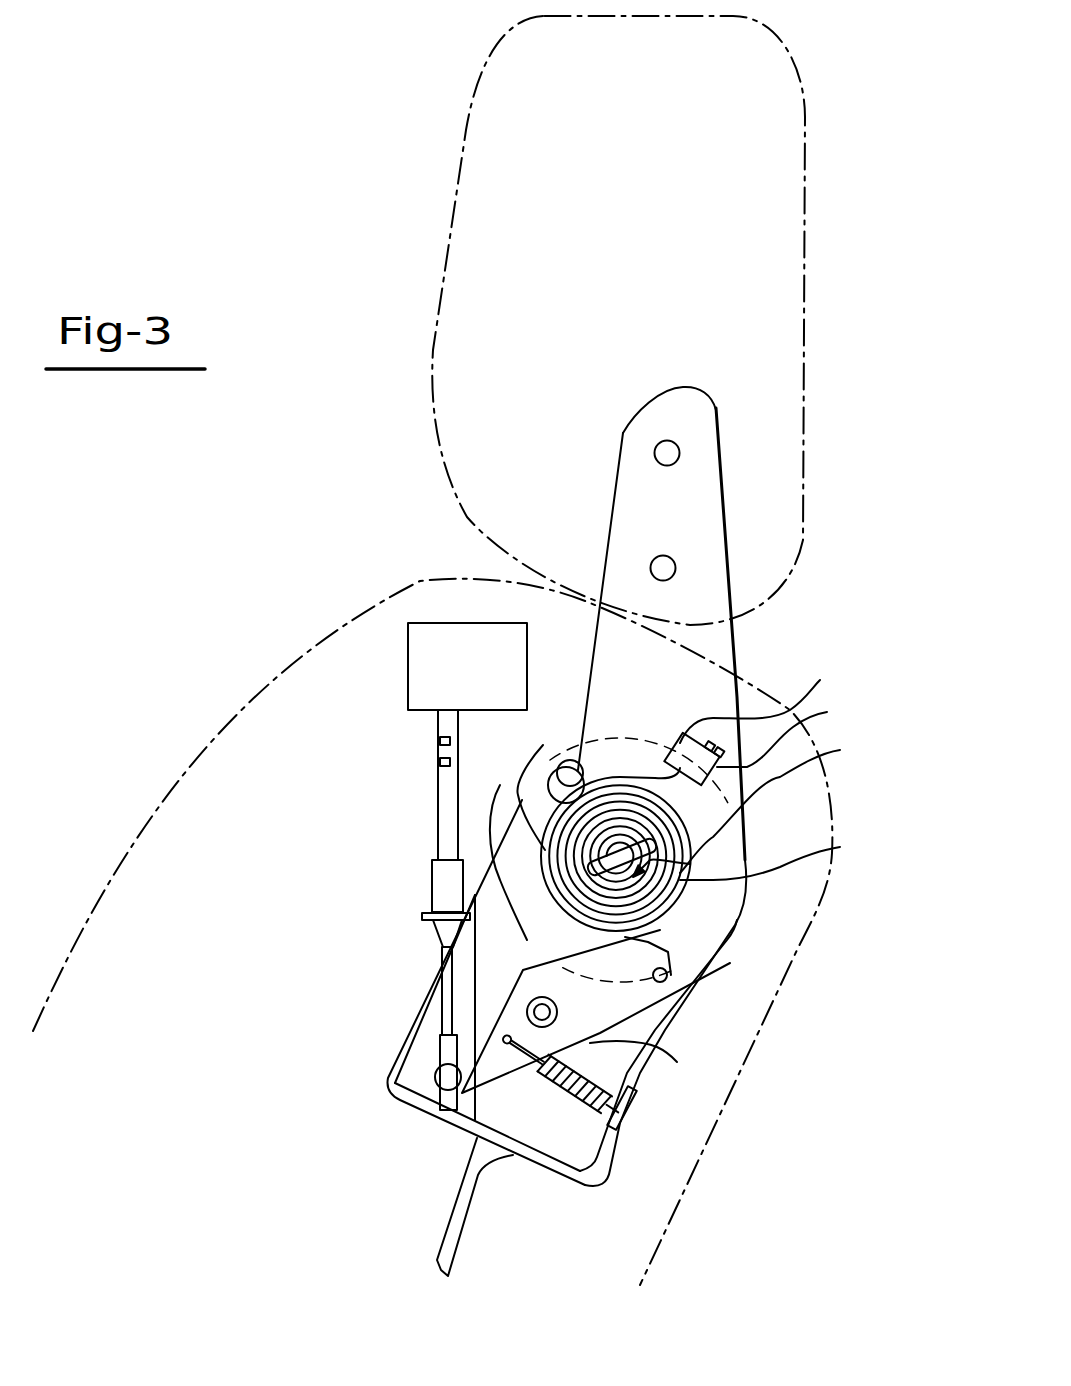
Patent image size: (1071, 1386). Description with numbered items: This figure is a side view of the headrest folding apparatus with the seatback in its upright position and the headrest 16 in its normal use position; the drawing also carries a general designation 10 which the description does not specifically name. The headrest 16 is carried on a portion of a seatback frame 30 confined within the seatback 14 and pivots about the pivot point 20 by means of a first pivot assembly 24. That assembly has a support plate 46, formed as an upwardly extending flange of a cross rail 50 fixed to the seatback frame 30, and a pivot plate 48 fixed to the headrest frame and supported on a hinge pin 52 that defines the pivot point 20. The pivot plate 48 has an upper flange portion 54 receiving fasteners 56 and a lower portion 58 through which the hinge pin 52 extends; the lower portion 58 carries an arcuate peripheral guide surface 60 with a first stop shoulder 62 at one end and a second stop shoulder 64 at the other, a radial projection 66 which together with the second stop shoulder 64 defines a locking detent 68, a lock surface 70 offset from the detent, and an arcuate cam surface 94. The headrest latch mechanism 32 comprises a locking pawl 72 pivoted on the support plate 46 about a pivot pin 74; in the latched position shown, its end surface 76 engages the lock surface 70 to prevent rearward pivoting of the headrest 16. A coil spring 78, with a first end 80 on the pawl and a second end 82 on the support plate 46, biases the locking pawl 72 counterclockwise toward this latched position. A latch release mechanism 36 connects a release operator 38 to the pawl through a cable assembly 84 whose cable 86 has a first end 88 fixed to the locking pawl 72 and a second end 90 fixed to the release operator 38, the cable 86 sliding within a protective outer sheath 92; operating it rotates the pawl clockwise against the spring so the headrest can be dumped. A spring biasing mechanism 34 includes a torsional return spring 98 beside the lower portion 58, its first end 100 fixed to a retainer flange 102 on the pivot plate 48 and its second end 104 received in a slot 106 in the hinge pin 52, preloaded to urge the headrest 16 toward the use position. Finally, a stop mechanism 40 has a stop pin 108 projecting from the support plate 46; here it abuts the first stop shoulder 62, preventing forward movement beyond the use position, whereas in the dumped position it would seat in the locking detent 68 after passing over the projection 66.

The seat assembly 10 is at (215, 520).
The seatback 14 is at (255, 857).
The headrest 16 is at (636, 235).
The pivot point 20 is at (680, 940).
The first pivot assembly 24 is at (745, 691).
The seatback frame 30 is at (537, 1167).
The headrest latch mechanism 32 is at (430, 1042).
The spring biasing mechanism 34 is at (718, 843).
The latch release mechanism 36 is at (410, 766).
The release operator 38 is at (477, 680).
The stop mechanism 40 is at (596, 705).
The support plate 46 is at (640, 1077).
The pivot plate 48 is at (744, 511).
The cross rail 50 is at (573, 1173).
The hinge pin 52 is at (617, 840).
The upper flange portion 54 is at (700, 470).
The fasteners 56 is at (663, 568).
The lower portion 58 is at (716, 860).
The arcuate peripheral guide surface 60 is at (512, 787).
The first stop shoulder 62 is at (568, 760).
The second stop shoulder 64 is at (700, 962).
The radial projection 66 is at (573, 935).
The locking detent 68 is at (630, 930).
The lock surface 70 is at (670, 973).
The locking pawl 72 is at (607, 1024).
The pivot pin 74 is at (635, 1057).
The end surface 76 is at (675, 990).
The coil spring 78 is at (640, 1090).
The first end 80 is at (480, 1140).
The second end 82 is at (607, 1147).
The cable assembly 84 is at (443, 817).
The cable 86 is at (443, 990).
The first end 88 is at (433, 1085).
The second end 90 is at (440, 747).
The protective outer sheath 92 is at (443, 797).
The arcuate cam surface 94 is at (723, 943).
The torsional return spring 98 is at (690, 873).
The first end 100 is at (770, 736).
The retainer flange 102 is at (776, 699).
The second end 104 is at (733, 877).
The slot 106 is at (783, 800).
The stop pin 108 is at (557, 777).